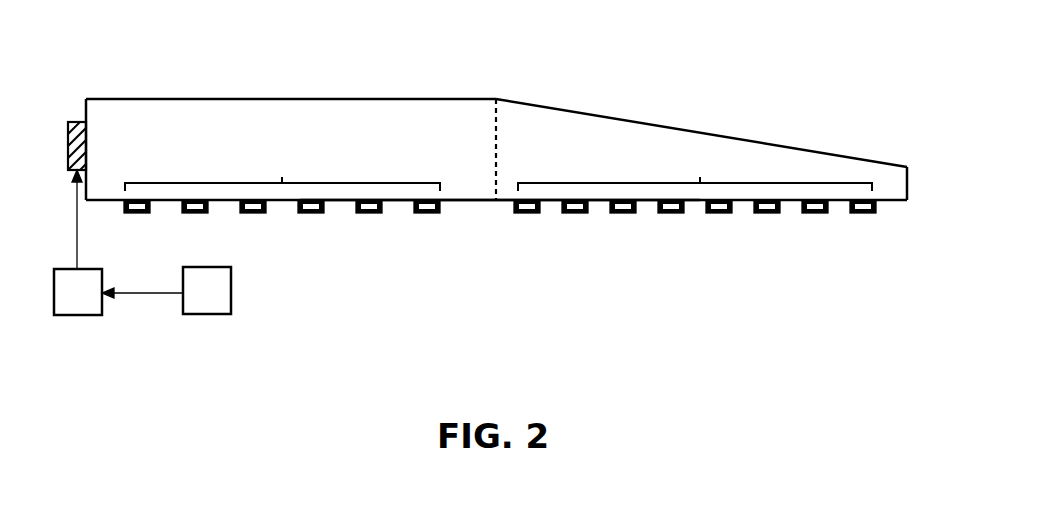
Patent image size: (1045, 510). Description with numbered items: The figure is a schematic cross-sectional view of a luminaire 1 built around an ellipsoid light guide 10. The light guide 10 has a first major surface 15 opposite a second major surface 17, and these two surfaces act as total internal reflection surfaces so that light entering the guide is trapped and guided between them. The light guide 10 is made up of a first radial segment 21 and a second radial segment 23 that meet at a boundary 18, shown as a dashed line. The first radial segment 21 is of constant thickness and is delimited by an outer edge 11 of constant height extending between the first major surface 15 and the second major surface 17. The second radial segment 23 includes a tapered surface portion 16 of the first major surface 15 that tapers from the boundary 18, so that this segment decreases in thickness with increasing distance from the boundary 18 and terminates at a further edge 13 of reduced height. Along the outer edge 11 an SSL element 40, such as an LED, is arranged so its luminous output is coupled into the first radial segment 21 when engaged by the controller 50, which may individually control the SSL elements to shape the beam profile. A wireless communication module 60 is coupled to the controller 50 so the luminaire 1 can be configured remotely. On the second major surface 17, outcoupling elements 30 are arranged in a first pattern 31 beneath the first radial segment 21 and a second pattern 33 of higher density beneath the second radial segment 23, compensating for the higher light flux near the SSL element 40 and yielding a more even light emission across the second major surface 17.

The luminaire 1 is at (481, 395).
The ellipsoid light guide 10 is at (895, 200).
The outer edge 11 is at (86, 108).
The further edge 13 is at (908, 178).
The first major surface 15 is at (277, 98).
The tapered surface portion 16 is at (806, 150).
The second major surface 17 is at (476, 200).
The boundary 18 is at (500, 142).
The first radial segment 21 is at (381, 120).
The second radial segment 23 is at (644, 135).
The outcoupling elements 30 is at (365, 213).
The first pattern 31 is at (282, 169).
The second pattern 33 is at (695, 169).
The SSL element 40 is at (66, 150).
The controller 50 is at (80, 316).
The wireless communication module 60 is at (210, 315).